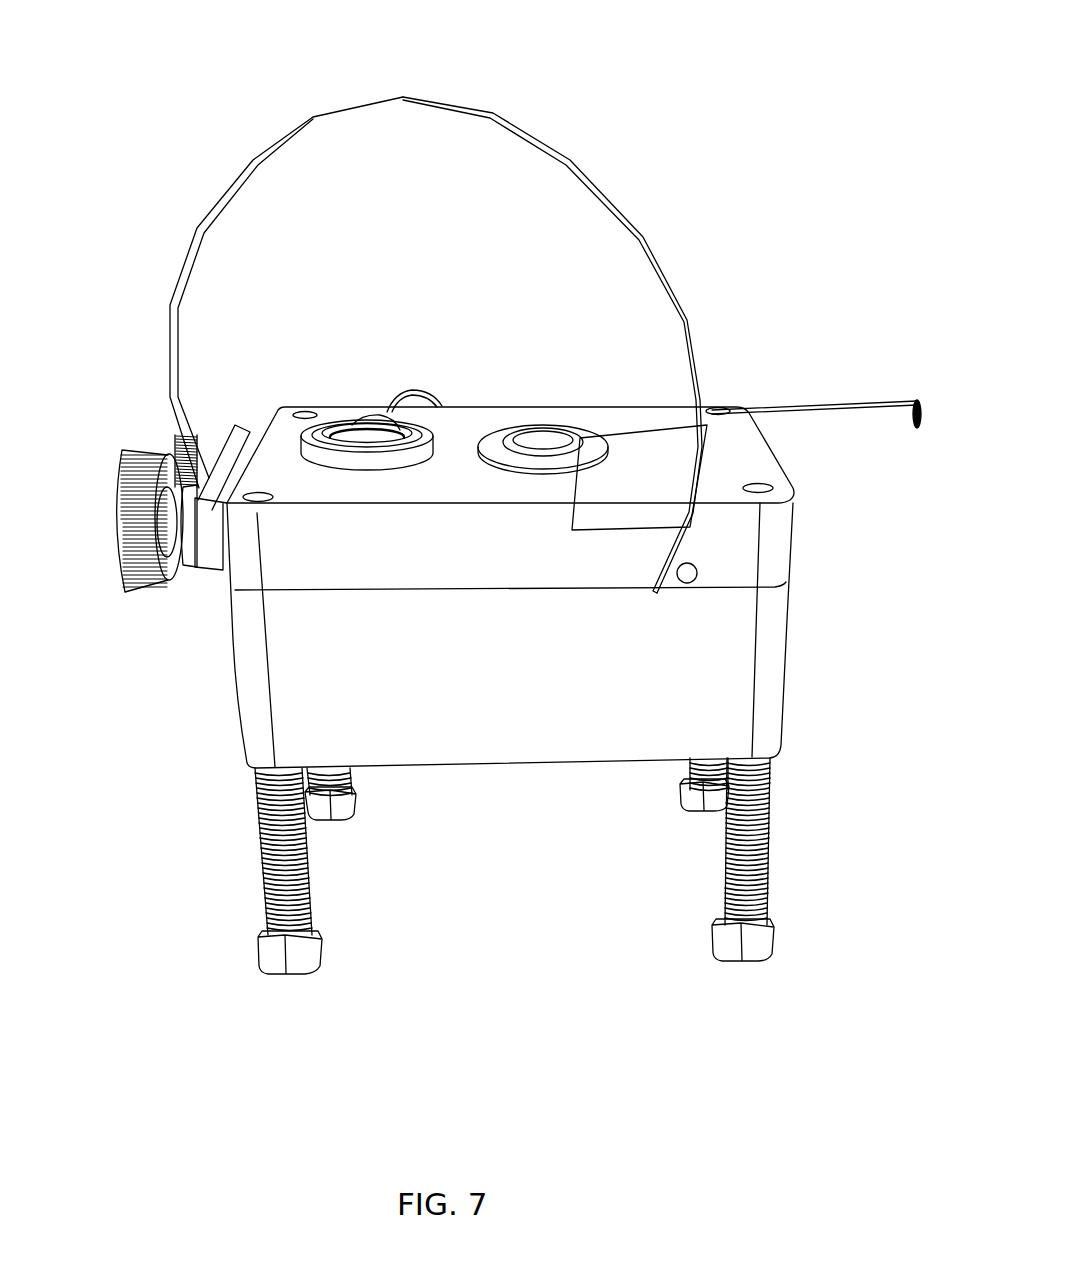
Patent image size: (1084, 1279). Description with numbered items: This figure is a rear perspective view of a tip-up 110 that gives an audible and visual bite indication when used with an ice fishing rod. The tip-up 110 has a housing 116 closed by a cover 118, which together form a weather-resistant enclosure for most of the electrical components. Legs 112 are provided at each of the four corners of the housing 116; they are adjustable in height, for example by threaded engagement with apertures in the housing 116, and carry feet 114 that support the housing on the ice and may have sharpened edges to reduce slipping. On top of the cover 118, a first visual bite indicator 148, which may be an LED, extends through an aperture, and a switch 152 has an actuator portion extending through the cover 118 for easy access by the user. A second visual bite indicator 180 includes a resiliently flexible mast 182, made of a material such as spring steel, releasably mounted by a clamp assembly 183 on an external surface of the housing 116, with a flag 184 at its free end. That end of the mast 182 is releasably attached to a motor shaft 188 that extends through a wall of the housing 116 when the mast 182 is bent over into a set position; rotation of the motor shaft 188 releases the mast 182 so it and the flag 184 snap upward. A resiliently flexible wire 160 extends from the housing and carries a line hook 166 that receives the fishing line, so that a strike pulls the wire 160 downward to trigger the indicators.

The tip-up 110 is at (846, 33).
The legs 112 is at (312, 887).
The feet 114 is at (300, 968).
The housing 116 is at (728, 690).
The cover 118 is at (770, 560).
The first visual bite indicator 148 is at (528, 440).
The switch 152 is at (358, 436).
The resiliently flexible wire 160 is at (817, 402).
The line hook 166 is at (913, 430).
The second visual bite indicator 180 is at (700, 172).
The mast 182 is at (672, 282).
The clamp assembly 183 is at (90, 584).
The flag 184 is at (583, 513).
The motor shaft 188 is at (687, 583).